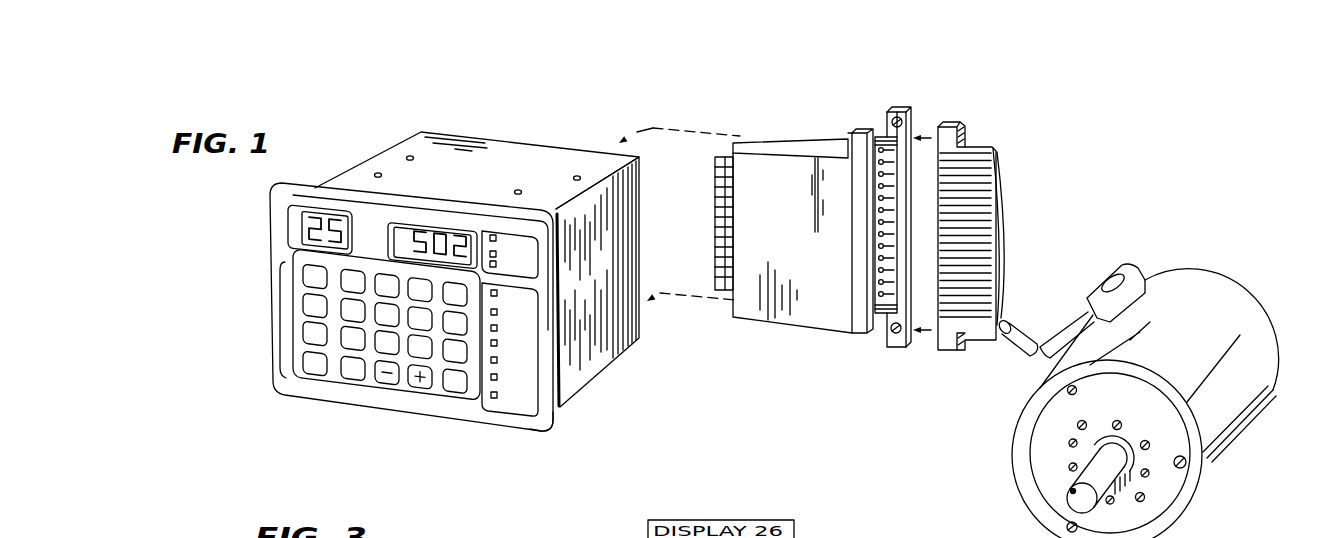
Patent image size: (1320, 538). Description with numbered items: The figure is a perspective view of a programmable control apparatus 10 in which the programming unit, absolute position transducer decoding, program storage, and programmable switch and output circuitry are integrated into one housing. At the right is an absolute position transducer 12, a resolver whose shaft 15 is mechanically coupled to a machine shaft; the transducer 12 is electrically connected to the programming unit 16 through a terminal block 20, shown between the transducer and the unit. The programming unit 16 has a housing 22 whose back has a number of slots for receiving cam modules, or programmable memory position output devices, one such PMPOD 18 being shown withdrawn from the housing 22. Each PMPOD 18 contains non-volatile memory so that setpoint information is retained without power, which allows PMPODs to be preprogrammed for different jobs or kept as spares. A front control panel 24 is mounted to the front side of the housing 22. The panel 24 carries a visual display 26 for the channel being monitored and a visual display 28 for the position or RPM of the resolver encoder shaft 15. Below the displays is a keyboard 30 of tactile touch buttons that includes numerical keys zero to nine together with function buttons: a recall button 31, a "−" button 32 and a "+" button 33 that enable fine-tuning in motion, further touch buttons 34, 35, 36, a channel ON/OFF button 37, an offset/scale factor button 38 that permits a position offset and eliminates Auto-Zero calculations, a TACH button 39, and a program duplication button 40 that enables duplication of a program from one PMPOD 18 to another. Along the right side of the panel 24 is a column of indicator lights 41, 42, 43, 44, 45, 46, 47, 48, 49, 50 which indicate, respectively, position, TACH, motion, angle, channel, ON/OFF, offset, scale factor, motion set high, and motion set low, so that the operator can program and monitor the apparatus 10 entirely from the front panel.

The programmable control apparatus 10 is at (248, 408).
The absolute position transducer 12 is at (1234, 284).
The shaft 15 is at (1073, 497).
The programming unit 16 is at (264, 261).
The programmable memory position output device (PMPOD) 18 is at (806, 331).
The terminal block 20 is at (952, 358).
The housing 22 is at (578, 160).
The front control panel 24 is at (548, 432).
The visual display 26 is at (322, 216).
The visual display 28 is at (404, 232).
The keyboard 30 is at (278, 320).
The recall button 31 is at (310, 368).
The "−" button 32 is at (380, 381).
The "+" button 33 is at (413, 384).
The tactile touch button 34 is at (417, 283).
The tactile touch button 35 is at (415, 312).
The tactile touch button 36 is at (415, 340).
The channel ON/OFF button 37 is at (458, 318).
The offset/scale factor button 38 is at (458, 292).
The TACH button 39 is at (462, 361).
The program duplication button 40 is at (448, 391).
The indicator light 41 is at (496, 238).
The indicator light 42 is at (496, 254).
The indicator light 43 is at (496, 264).
The indicator light 44 is at (497, 293).
The indicator light 45 is at (497, 312).
The indicator light 46 is at (497, 328).
The indicator light 47 is at (497, 343).
The indicator light 48 is at (497, 360).
The indicator light 49 is at (497, 377).
The indicator light 50 is at (497, 395).